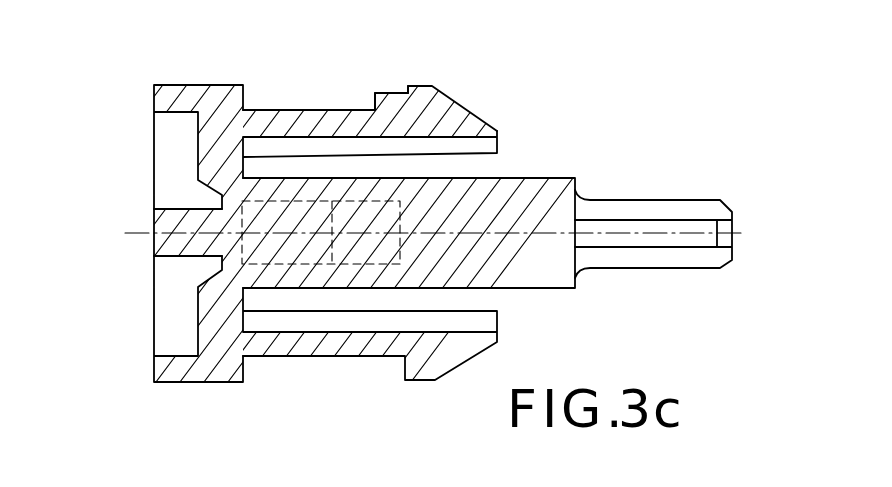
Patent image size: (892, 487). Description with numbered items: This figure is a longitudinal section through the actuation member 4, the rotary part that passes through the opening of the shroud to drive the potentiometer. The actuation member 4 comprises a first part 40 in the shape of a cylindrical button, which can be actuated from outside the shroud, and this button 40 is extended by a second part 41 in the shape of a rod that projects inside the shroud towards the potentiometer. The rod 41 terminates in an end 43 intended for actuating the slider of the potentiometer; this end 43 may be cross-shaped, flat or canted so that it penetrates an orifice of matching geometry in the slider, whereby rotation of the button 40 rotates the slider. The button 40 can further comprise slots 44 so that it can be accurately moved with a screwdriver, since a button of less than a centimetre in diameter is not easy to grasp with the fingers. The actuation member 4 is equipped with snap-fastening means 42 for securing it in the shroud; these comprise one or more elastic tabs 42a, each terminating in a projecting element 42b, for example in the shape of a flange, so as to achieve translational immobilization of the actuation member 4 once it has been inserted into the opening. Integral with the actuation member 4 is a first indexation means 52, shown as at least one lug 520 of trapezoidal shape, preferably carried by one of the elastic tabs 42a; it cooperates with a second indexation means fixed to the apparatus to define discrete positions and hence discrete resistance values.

The actuation member 4 is at (128, 203).
The first part (cylindrical button) 40 is at (217, 150).
The second part (rod) 41 is at (525, 190).
The snap-fastening means 42 is at (517, 63).
The elastic tab 42a is at (318, 118).
The projecting element 42b is at (467, 107).
The end (slider actuation end) 43 is at (705, 256).
The slots 44 is at (170, 245).
The first indexation means 52 is at (395, 60).
The lug 520 is at (396, 103).